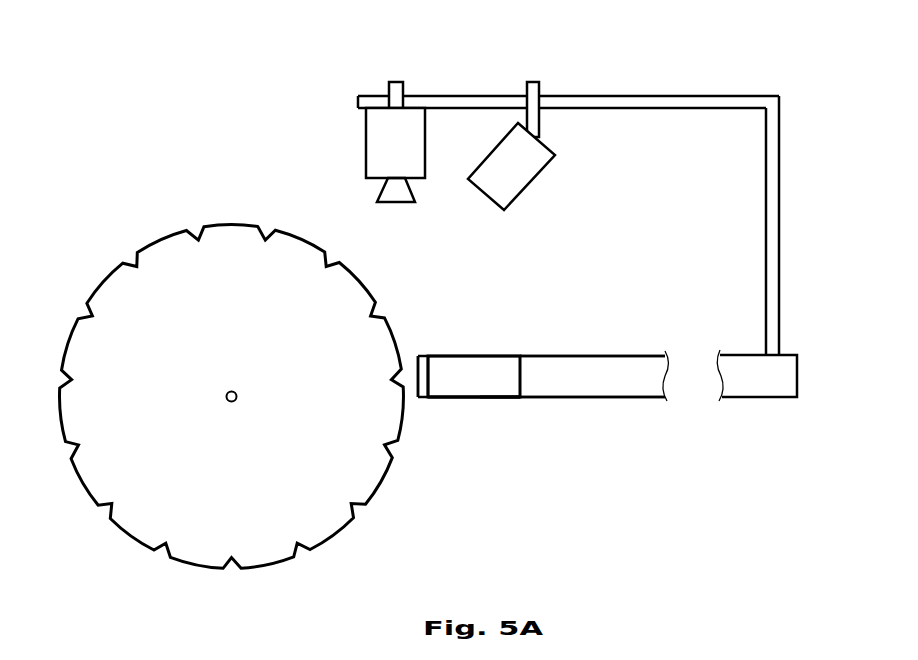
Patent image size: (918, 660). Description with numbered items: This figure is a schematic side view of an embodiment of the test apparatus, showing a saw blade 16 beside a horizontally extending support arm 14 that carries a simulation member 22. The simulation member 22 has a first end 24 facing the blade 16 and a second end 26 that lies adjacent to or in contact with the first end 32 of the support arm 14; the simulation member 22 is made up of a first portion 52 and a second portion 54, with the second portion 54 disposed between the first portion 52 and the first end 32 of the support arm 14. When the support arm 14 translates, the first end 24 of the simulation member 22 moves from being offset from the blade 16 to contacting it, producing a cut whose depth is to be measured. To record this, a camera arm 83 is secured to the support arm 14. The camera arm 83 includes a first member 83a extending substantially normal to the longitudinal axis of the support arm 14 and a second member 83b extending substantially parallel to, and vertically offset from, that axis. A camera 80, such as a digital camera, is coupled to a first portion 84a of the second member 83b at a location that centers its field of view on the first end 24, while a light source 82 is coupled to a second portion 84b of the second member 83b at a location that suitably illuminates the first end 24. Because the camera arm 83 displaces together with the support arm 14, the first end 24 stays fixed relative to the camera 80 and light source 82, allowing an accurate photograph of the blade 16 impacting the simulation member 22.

The support arm 14 is at (605, 369).
The blade 16 is at (228, 224).
The simulation member 22 is at (473, 355).
The first end 24 is at (424, 333).
The second end 26 is at (517, 418).
The first end 32 is at (558, 355).
The first portion 52 is at (423, 398).
The second portion 54 is at (477, 398).
The camera 80 is at (366, 138).
The light source 82 is at (518, 178).
The camera arm 83 is at (605, 199).
The first member 83a is at (780, 298).
The second member 83b is at (667, 95).
The first portion 84a is at (405, 62).
The second portion 84b is at (545, 62).